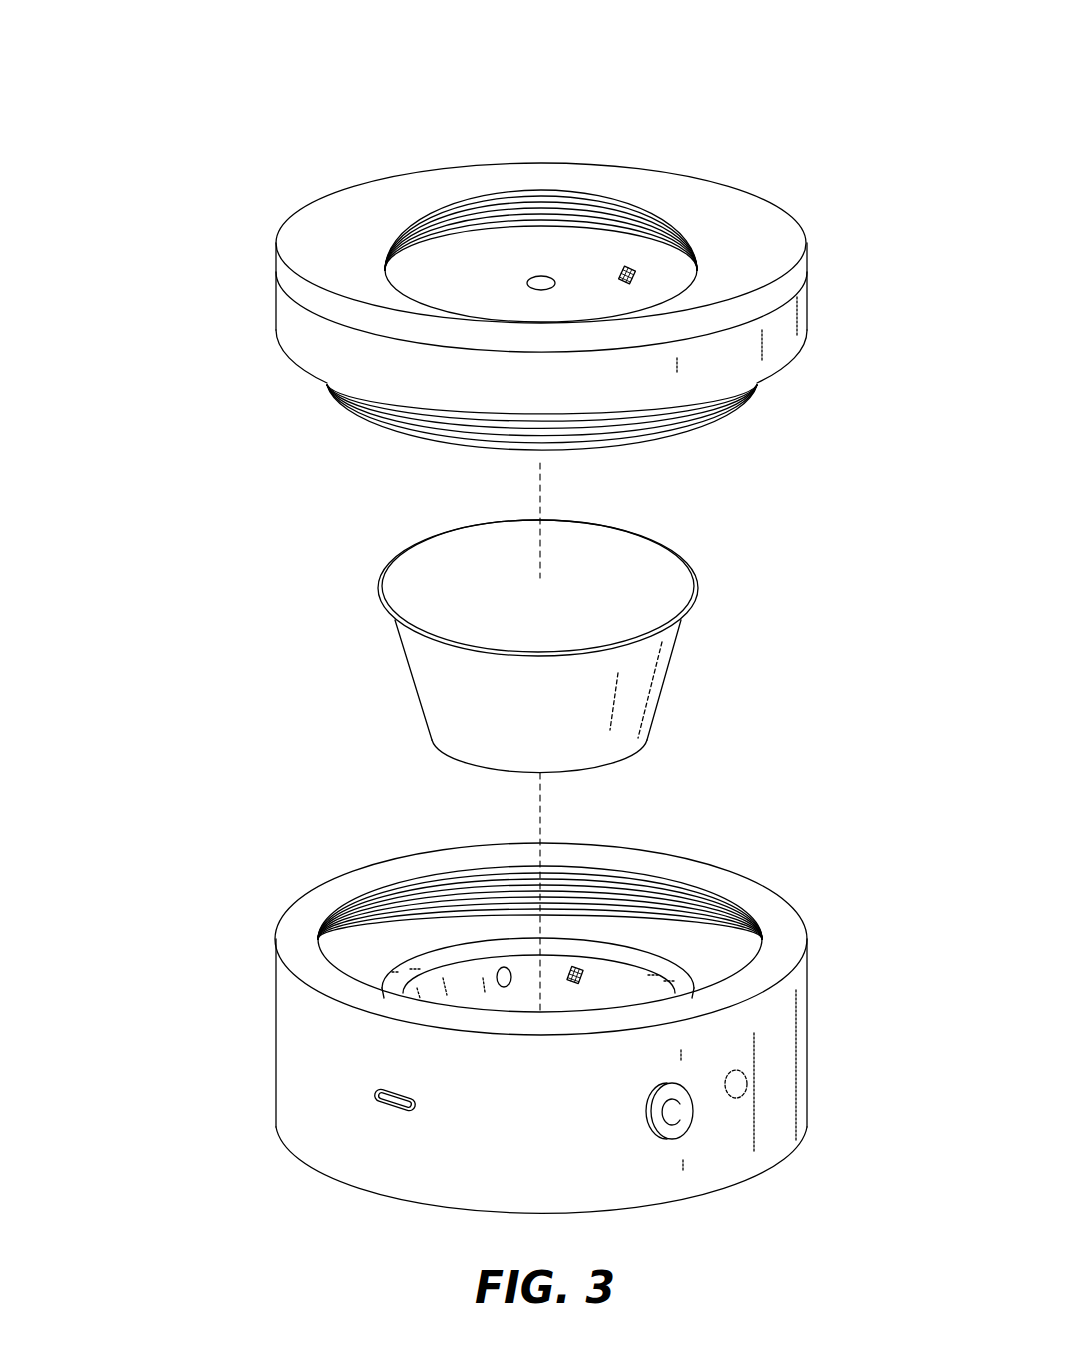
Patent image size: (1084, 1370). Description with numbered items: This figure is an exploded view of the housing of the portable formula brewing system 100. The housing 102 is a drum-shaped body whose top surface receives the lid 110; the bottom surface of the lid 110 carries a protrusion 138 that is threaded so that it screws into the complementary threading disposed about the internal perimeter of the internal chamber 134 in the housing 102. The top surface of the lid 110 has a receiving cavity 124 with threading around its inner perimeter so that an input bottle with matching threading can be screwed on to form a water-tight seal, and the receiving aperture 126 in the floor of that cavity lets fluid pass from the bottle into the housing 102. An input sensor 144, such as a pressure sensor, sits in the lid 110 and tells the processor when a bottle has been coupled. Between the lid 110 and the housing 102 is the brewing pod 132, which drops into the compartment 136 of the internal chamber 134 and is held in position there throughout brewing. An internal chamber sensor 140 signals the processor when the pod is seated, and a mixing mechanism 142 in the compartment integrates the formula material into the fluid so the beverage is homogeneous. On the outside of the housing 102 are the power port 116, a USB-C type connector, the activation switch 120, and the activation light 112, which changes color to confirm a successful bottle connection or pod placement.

The portable formula brewing system 100 is at (174, 46).
The housing 102 is at (549, 996).
The lid 110 is at (494, 321).
The activation light 112 is at (737, 1084).
The power port 116 is at (375, 1097).
The activation switch 120 is at (668, 1112).
The receiving cavity 124 is at (414, 243).
The receiving aperture 126 is at (540, 283).
The brewing pod 132 is at (423, 664).
The internal chamber 134 is at (367, 920).
The compartment 136 is at (640, 988).
The protrusion 138 is at (385, 425).
The internal chamber sensor 140 is at (577, 965).
The mixing mechanism 142 is at (501, 967).
The input sensor 144 is at (627, 266).